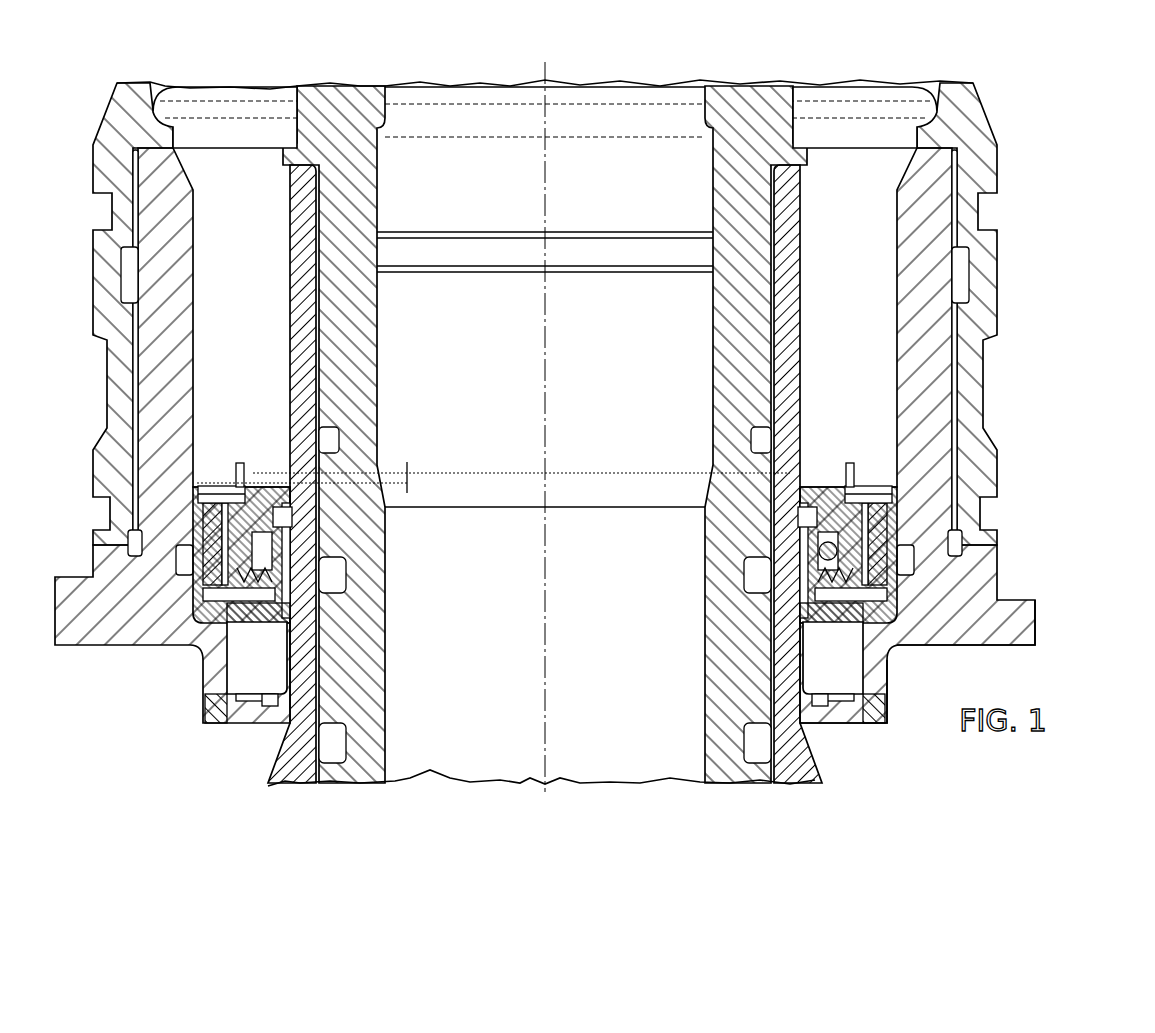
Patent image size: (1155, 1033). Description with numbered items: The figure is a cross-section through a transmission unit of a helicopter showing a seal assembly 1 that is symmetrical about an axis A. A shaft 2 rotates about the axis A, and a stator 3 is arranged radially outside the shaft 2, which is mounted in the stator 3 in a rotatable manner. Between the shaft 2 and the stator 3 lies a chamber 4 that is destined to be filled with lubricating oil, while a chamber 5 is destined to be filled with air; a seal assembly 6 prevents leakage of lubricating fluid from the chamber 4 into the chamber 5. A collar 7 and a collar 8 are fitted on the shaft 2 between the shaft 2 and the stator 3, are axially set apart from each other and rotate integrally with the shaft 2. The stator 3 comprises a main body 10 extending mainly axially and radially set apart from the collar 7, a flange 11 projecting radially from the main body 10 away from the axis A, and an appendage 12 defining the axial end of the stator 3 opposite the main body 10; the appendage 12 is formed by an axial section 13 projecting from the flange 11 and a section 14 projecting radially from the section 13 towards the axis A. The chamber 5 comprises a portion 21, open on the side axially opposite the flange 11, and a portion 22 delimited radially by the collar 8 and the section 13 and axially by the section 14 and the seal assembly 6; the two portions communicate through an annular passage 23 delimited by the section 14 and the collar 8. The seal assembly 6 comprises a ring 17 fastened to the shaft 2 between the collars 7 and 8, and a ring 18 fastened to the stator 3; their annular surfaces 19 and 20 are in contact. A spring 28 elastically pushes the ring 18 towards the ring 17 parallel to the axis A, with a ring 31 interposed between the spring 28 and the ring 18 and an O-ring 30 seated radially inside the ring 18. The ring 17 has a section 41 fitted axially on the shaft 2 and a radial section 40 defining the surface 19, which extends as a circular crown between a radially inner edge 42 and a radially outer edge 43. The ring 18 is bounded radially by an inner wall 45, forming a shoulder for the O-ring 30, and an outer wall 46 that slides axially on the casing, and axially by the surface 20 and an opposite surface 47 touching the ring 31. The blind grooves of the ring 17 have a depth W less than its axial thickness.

The seal assembly 1 is at (1040, 172).
The shaft 2 is at (742, 105).
The stator 3 is at (930, 228).
The chamber 4 is at (808, 204).
The chamber 5 is at (263, 655).
The seal assembly 6 is at (822, 630).
The collar 7 is at (782, 295).
The collar 8 is at (815, 790).
The main body 10 is at (932, 390).
The flange 11 is at (947, 603).
The appendage 12 is at (877, 697).
The axial section 13 is at (905, 656).
The section 14 is at (873, 712).
The ring 17 is at (300, 415).
The ring 18 is at (250, 505).
The surface 19 is at (826, 498).
The surface 20 is at (818, 486).
The portion 21 is at (818, 710).
The portion 22 is at (815, 655).
The annular passage 23 is at (272, 705).
The spring 28 is at (248, 575).
The O-ring 30 is at (258, 555).
The ring 31 is at (243, 602).
The radial section 40 is at (850, 462).
The section 41 is at (793, 410).
The edge 42 is at (765, 471).
The edge 43 is at (868, 472).
The wall 45 is at (262, 548).
The wall 46 is at (226, 487).
The surface 47 is at (948, 600).
The axis A is at (545, 197).
The depth W is at (407, 473).